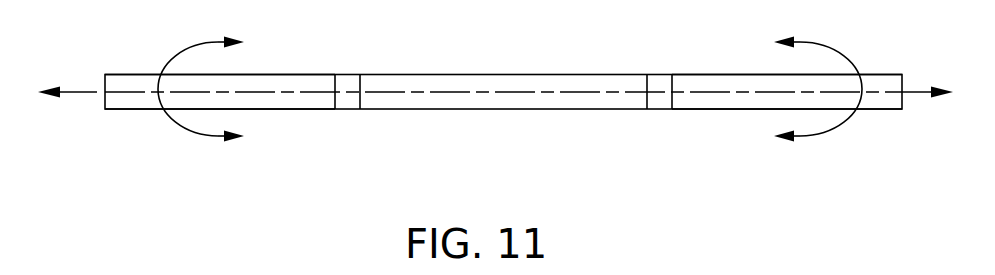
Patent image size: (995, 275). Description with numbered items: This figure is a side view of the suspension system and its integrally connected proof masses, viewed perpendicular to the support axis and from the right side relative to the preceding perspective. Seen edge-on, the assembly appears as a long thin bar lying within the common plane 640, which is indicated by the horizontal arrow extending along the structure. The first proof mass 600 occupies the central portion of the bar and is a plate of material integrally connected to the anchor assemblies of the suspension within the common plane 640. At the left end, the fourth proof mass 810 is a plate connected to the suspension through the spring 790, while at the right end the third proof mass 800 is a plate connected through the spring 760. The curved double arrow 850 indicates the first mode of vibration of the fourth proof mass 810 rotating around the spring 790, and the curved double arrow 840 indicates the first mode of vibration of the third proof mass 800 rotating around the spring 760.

The first proof mass 600 is at (498, 82).
The common plane 640 is at (83, 90).
The spring 760 is at (660, 82).
The spring 790 is at (348, 82).
The third proof mass 800 is at (750, 82).
The fourth proof mass 810 is at (276, 78).
The curved double arrow 840 is at (834, 130).
The curved double arrow 850 is at (183, 132).